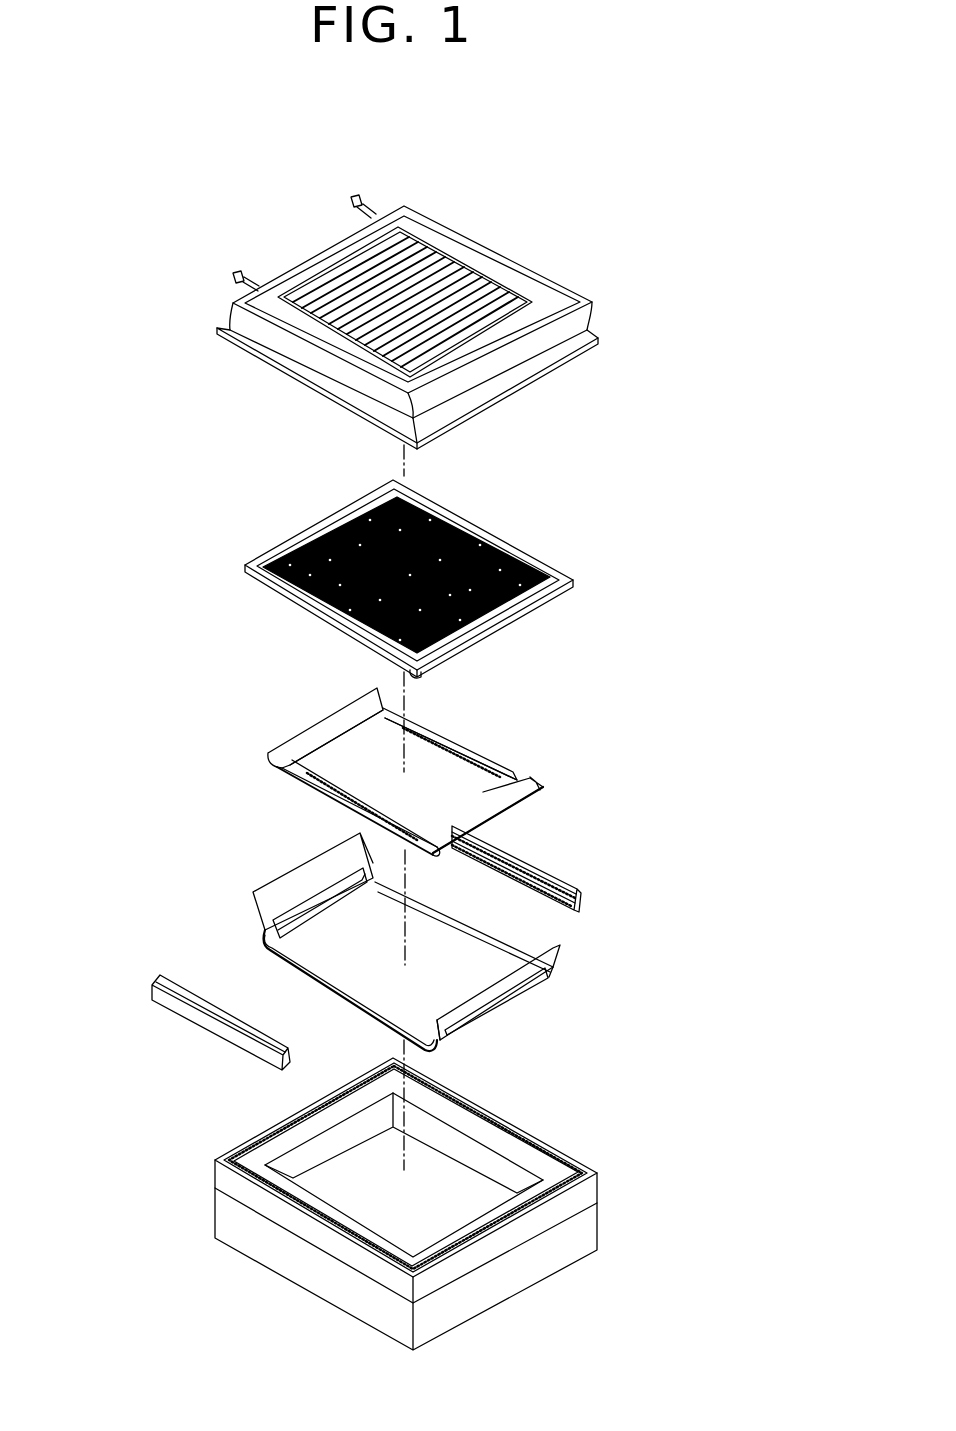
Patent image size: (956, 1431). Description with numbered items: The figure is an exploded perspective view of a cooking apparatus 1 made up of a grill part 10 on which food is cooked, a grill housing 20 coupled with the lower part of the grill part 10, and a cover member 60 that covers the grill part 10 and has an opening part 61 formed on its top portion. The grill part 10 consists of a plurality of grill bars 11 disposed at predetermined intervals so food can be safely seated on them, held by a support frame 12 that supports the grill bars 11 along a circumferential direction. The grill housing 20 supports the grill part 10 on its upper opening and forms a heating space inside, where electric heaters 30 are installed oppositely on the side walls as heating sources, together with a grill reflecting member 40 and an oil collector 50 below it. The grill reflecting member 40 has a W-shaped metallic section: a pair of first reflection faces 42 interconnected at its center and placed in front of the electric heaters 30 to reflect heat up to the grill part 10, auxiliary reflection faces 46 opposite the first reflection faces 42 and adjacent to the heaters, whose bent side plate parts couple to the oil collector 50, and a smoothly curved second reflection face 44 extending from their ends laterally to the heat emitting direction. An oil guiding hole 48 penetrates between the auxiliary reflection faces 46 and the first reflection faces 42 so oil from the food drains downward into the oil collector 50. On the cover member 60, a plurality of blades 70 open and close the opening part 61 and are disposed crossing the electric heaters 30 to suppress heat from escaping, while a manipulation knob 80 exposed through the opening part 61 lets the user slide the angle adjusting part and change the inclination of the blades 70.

The cooking apparatus 1 is at (145, 185).
The grill part 10 is at (607, 502).
The grill bars 11 is at (468, 540).
The support frame 12 is at (540, 563).
The grill housing 20 is at (597, 1226).
The electric heaters 30 is at (563, 870).
The grill reflecting member 40 is at (256, 750).
The first reflection faces 42 is at (313, 743).
The second reflection face 44 is at (343, 712).
The auxiliary reflection faces 46 is at (423, 722).
The oil guiding hole 48 is at (460, 748).
The oil collector 50 is at (550, 977).
The cover member 60 is at (238, 365).
The opening part 61 is at (527, 297).
The blades 70 is at (413, 240).
The manipulation knob 80 is at (350, 202).